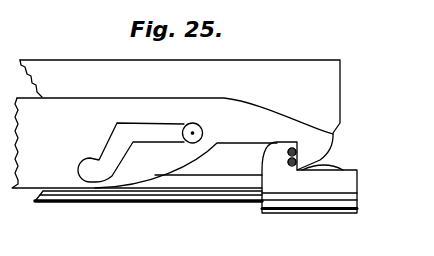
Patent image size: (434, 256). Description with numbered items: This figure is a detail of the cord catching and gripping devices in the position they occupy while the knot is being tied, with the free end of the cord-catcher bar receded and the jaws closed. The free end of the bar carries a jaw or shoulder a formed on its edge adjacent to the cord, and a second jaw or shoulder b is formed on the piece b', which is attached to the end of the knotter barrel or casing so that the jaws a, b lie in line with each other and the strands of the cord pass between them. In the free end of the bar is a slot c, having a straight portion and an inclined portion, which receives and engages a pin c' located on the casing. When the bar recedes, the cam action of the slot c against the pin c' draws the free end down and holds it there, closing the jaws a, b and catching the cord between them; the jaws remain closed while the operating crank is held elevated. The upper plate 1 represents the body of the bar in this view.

The upper plate 1 is at (178, 115).
The jaw or shoulder a is at (177, 149).
The slot c is at (131, 152).
The pin c' is at (184, 133).
The jaw or shoulder b is at (309, 177).
The piece b' is at (309, 193).